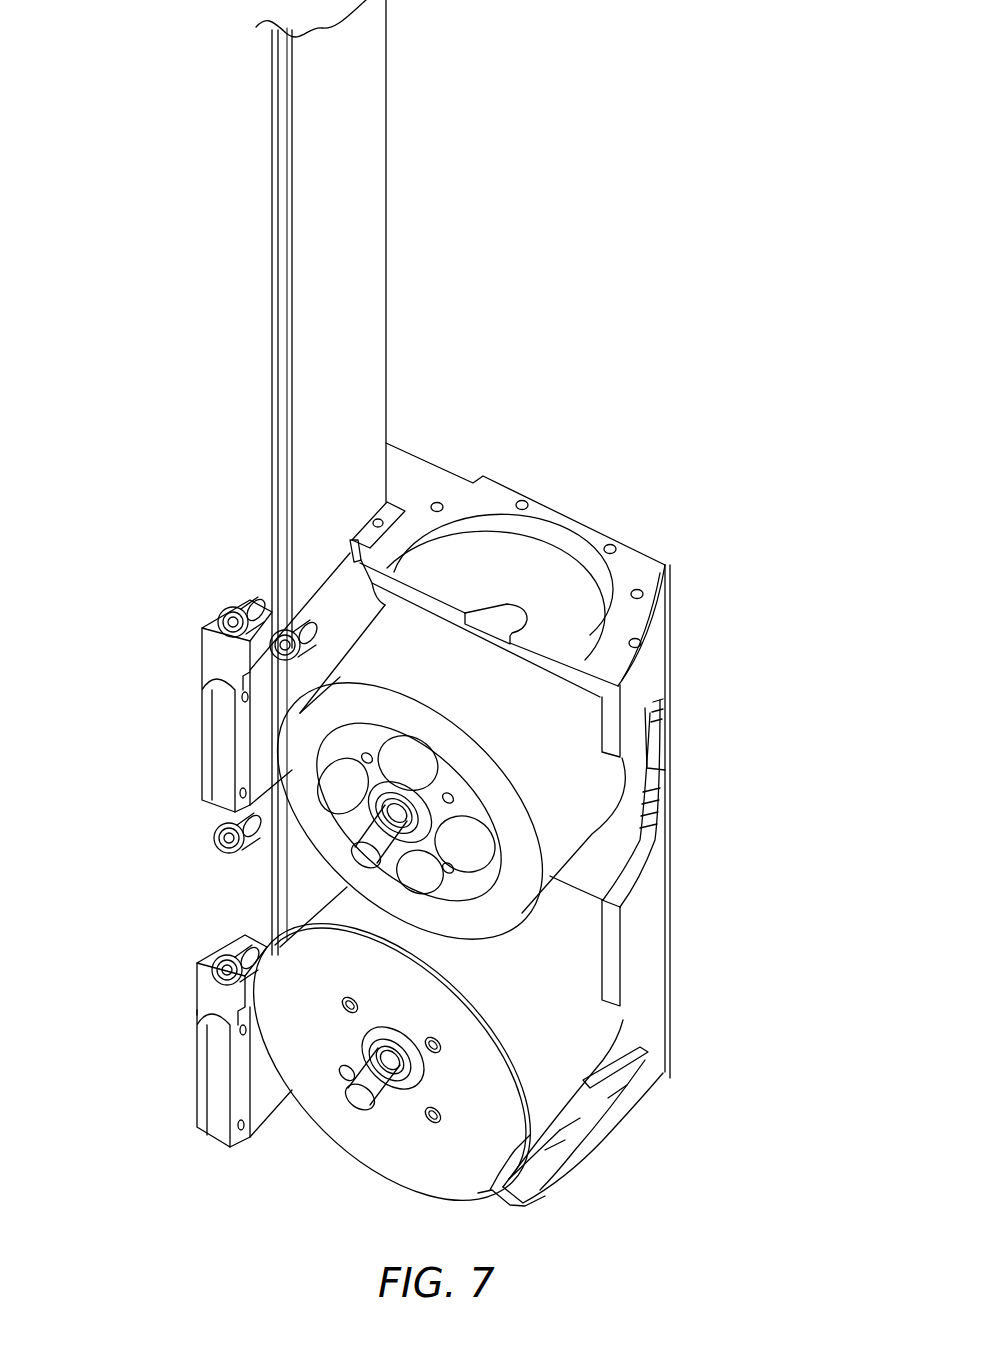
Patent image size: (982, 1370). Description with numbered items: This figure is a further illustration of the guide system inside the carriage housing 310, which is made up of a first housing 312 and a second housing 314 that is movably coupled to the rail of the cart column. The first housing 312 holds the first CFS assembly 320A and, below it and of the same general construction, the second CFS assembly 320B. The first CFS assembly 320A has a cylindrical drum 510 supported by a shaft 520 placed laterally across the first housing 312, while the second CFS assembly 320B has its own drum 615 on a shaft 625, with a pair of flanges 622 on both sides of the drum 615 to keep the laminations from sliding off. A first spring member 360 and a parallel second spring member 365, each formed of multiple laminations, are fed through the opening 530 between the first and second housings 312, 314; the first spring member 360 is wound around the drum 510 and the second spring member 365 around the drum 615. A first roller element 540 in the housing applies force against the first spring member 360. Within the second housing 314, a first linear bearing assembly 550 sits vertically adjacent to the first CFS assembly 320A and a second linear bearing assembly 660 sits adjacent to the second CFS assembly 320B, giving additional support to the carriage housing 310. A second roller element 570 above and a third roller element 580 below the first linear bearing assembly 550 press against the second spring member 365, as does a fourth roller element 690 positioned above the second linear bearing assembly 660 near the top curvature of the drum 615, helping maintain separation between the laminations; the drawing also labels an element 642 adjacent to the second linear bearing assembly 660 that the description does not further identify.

The carriage housing 310 is at (613, 478).
The first housing 312 is at (668, 569).
The second housing 314 is at (394, 456).
The first CFS assembly 320A is at (702, 777).
The second CFS assembly 320B is at (702, 1058).
The first spring member 360 is at (370, 289).
The second spring member 365 is at (270, 305).
The drum 510 is at (498, 930).
The shaft 520 is at (365, 863).
The opening 530 is at (394, 490).
The first roller element 540 is at (356, 607).
The first linear bearing assembly 550 is at (222, 795).
The second roller element 570 is at (226, 600).
The third roller element 580 is at (205, 845).
The drum 615 is at (582, 1020).
The flanges 622 is at (477, 1193).
The shaft 625 is at (355, 1105).
The fastener 642 is at (248, 940).
The second linear bearing assembly 660 is at (222, 1088).
The fourth roller element 690 is at (165, 1024).